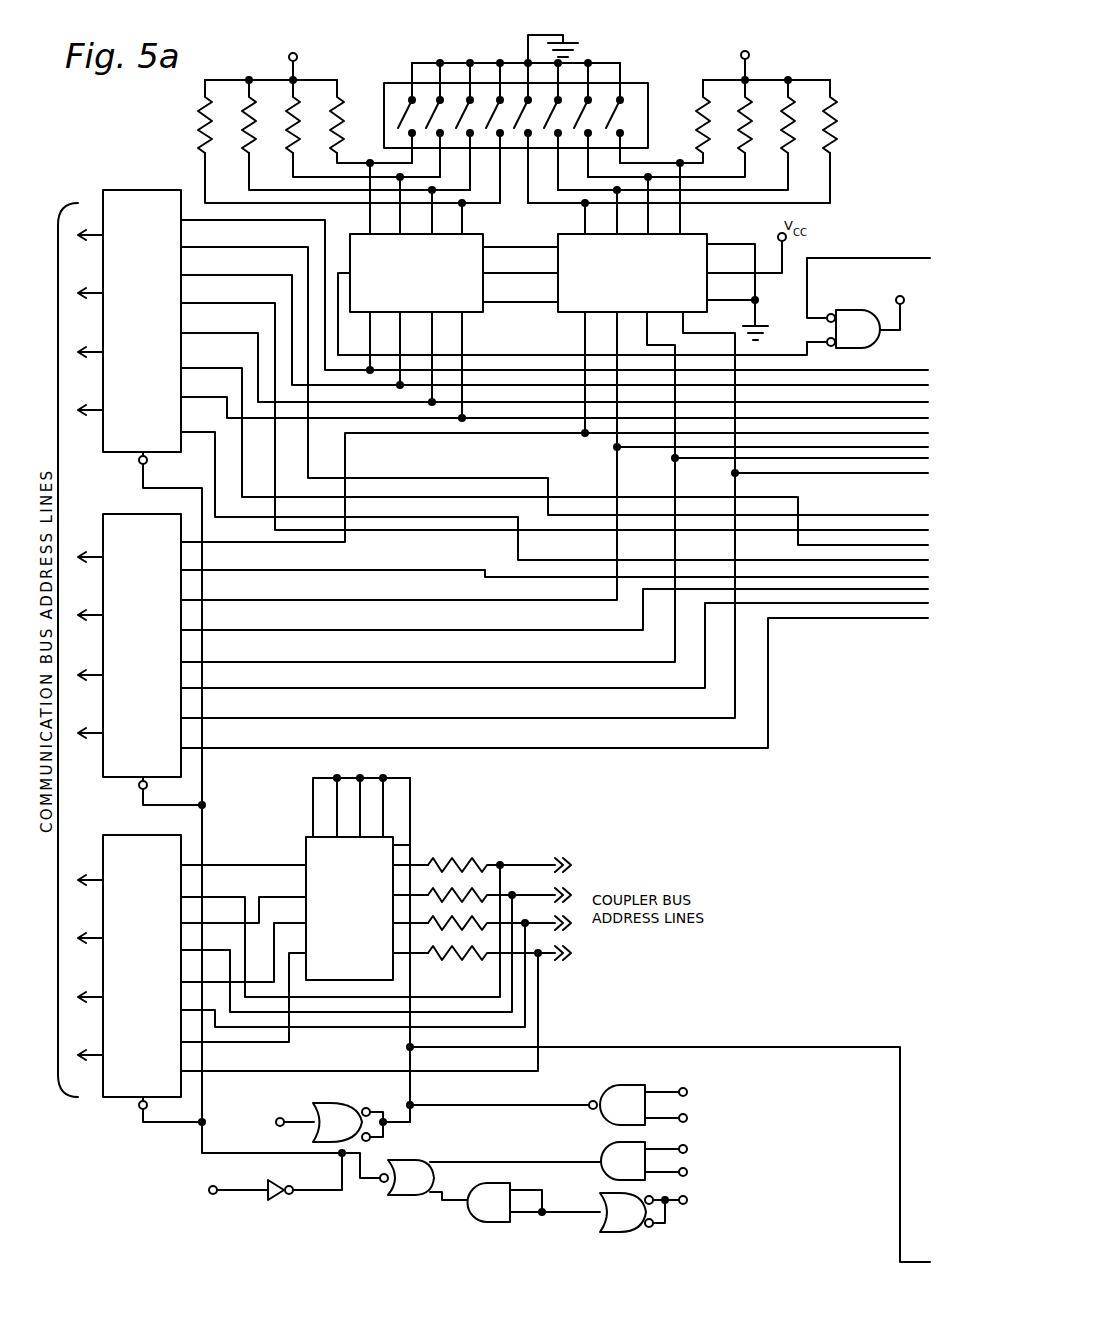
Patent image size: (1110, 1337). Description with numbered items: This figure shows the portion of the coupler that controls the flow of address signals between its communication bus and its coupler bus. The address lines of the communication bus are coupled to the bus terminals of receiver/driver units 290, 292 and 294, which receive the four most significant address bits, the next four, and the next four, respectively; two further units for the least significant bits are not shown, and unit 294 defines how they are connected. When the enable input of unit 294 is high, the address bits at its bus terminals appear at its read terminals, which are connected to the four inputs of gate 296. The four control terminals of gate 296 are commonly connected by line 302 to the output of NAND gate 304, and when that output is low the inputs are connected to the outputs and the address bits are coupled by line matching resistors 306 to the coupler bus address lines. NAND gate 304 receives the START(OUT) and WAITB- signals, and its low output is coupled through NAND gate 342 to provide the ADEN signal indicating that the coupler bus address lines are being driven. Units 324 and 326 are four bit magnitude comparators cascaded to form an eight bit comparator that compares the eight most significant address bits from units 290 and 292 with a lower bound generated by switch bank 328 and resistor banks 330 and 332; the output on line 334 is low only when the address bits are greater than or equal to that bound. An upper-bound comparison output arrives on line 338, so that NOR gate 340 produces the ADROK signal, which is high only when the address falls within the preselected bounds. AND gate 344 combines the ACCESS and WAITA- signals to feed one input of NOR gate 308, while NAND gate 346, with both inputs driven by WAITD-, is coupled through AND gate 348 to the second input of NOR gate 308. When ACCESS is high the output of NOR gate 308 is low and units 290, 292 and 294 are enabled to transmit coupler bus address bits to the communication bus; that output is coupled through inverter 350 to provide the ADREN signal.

The receiver/driver unit 290 is at (176, 188).
The receiver/driver unit 292 is at (138, 512).
The receiver/driver unit 294 is at (135, 833).
The gate 296 is at (304, 848).
The line 302 is at (412, 825).
The NAND gate 304 is at (610, 1090).
The line matching resistors 306 is at (535, 863).
The NOR gate 308 is at (422, 1168).
The four bit magnitude comparator 324 is at (490, 228).
The four bit magnitude comparator 326 is at (564, 242).
The switch bank 328 is at (400, 88).
The resistor bank 330 is at (170, 127).
The resistor bank 332 is at (900, 152).
The line 334 is at (786, 347).
The line 338 is at (837, 258).
The NOR gate 340 is at (842, 312).
The NAND gate 342 is at (327, 1115).
The AND gate 344 is at (608, 1150).
The NAND gate 346 is at (612, 1208).
The AND gate 348 is at (478, 1222).
The inverter 350 is at (272, 1186).